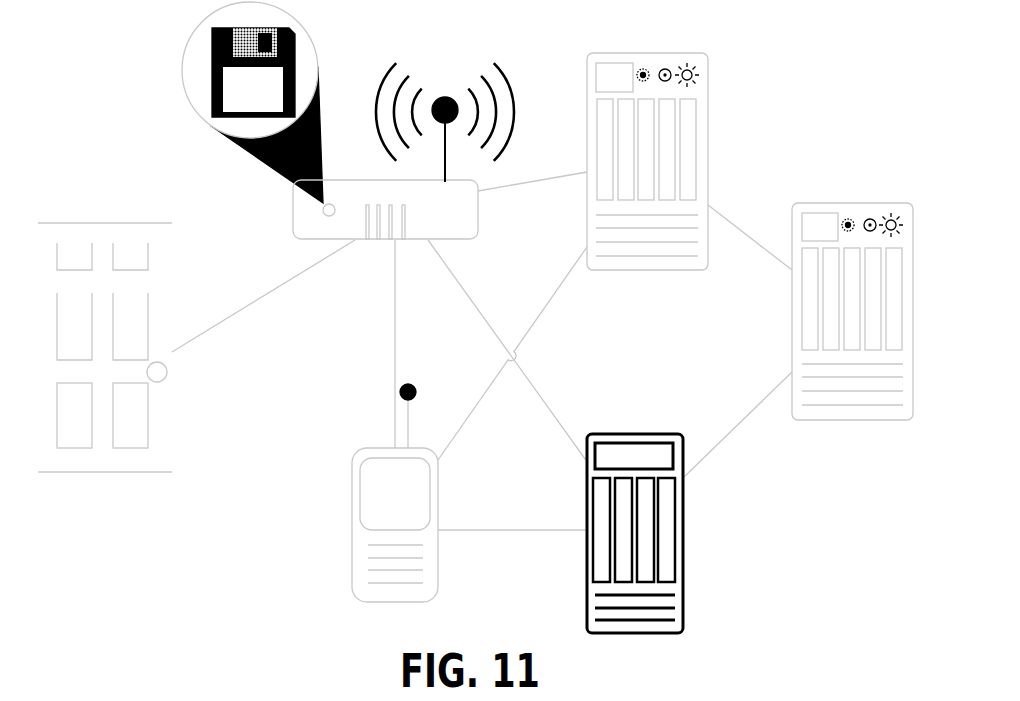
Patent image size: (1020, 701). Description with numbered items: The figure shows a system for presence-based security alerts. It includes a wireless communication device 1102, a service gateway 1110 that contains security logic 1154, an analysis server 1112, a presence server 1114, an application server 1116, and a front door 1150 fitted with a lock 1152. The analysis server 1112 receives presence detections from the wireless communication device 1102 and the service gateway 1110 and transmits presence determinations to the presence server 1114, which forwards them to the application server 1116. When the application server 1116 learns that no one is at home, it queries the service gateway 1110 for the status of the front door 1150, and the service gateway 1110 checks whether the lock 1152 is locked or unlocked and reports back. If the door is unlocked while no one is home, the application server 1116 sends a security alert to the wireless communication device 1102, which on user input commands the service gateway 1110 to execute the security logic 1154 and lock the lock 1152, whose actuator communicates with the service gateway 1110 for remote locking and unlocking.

The wireless communication device 1102 is at (335, 493).
The service gateway 1110 is at (427, 175).
The analysis server 1112 is at (709, 161).
The presence server 1114 is at (792, 311).
The application server 1116 is at (697, 533).
The front door 1150 is at (132, 323).
The lock 1152 is at (213, 395).
The security logic 1154 is at (300, 102).